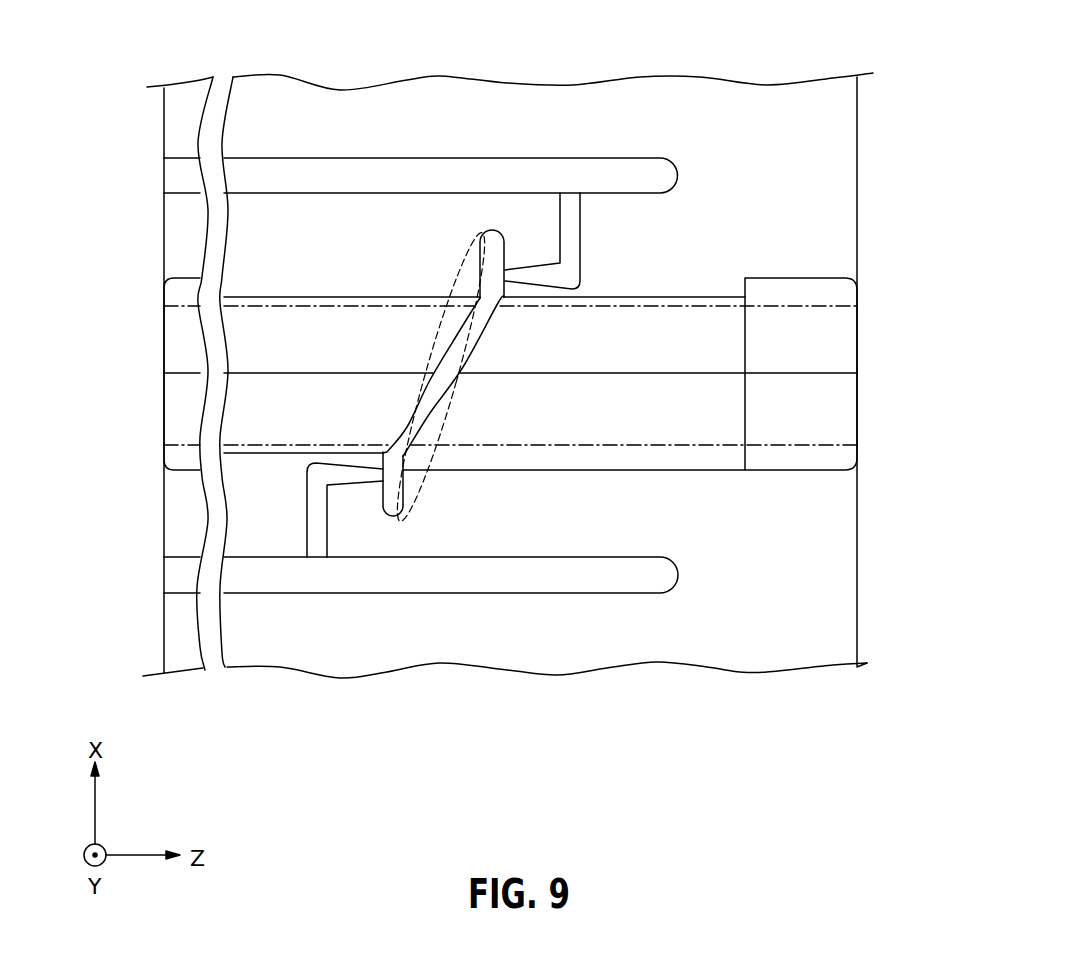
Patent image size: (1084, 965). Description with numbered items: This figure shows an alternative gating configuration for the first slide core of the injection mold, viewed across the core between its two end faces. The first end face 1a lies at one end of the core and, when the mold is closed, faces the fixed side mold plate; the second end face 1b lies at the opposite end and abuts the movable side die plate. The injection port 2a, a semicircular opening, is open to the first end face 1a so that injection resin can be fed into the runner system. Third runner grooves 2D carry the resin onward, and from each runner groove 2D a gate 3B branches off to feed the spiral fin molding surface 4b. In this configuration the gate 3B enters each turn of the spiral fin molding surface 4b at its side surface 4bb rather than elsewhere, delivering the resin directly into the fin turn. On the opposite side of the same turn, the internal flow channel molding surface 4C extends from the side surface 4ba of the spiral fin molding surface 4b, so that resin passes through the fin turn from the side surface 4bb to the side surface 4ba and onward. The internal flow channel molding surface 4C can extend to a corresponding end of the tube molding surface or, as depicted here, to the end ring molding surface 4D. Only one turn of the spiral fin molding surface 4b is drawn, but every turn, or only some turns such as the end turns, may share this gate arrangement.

The first end face 1a is at (165, 645).
The second end face 1b is at (858, 618).
The injection port 2a is at (160, 177).
The third runner groove 2D is at (653, 173).
The gate 3B is at (572, 240).
The spiral fin molding surface 4b is at (483, 347).
The side surface of the spiral fin molding surface 4ba is at (507, 252).
The side surface of the spiral fin molding surface 4bb is at (385, 497).
The internal flow channel molding surface 4C is at (707, 463).
The end ring molding surface 4D is at (807, 290).